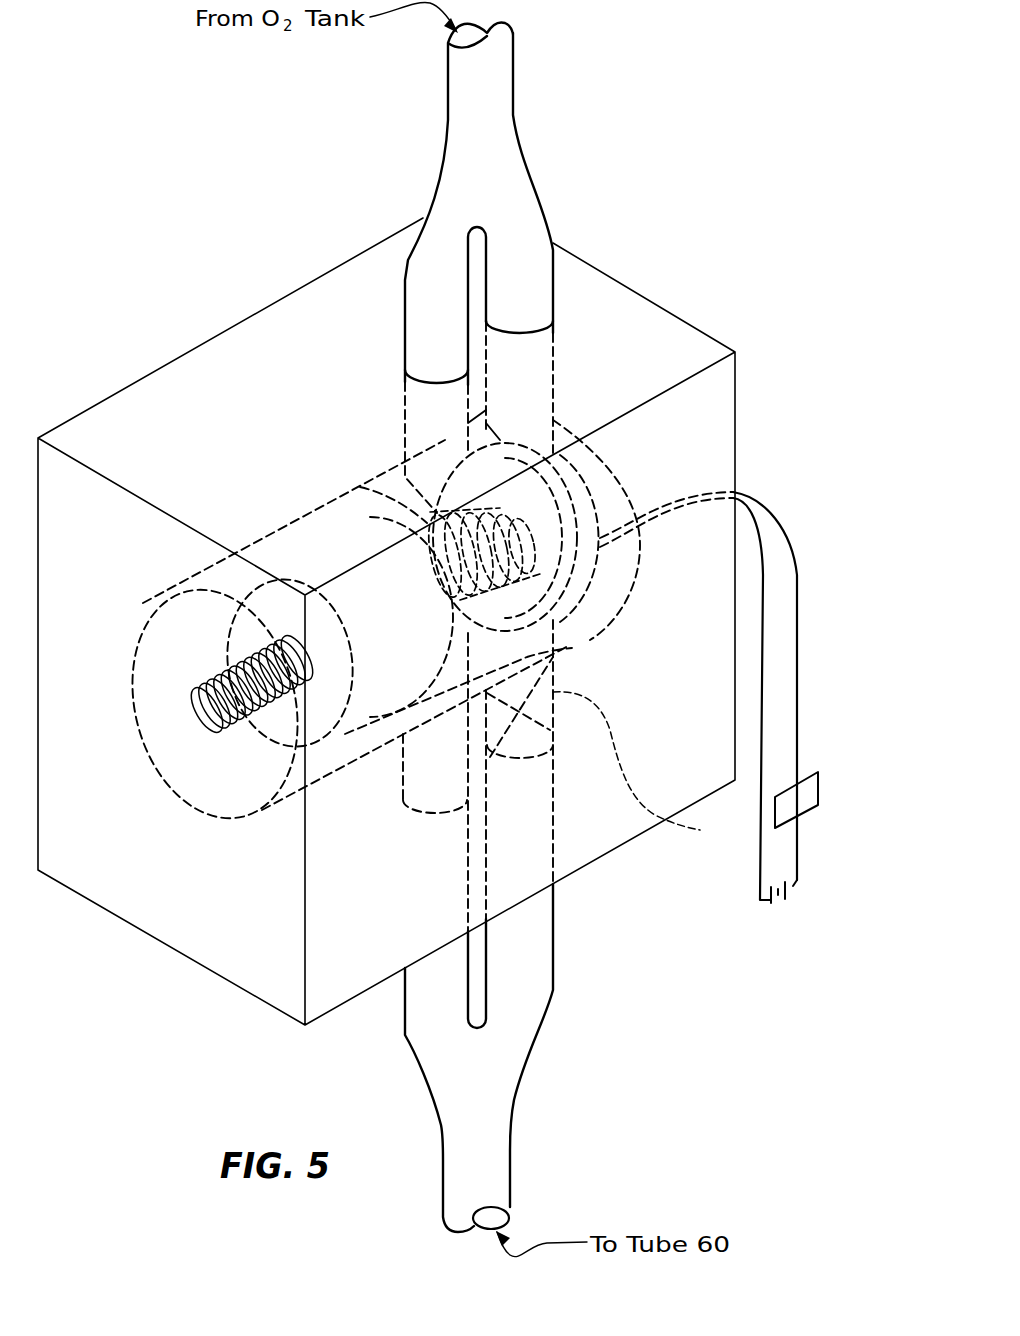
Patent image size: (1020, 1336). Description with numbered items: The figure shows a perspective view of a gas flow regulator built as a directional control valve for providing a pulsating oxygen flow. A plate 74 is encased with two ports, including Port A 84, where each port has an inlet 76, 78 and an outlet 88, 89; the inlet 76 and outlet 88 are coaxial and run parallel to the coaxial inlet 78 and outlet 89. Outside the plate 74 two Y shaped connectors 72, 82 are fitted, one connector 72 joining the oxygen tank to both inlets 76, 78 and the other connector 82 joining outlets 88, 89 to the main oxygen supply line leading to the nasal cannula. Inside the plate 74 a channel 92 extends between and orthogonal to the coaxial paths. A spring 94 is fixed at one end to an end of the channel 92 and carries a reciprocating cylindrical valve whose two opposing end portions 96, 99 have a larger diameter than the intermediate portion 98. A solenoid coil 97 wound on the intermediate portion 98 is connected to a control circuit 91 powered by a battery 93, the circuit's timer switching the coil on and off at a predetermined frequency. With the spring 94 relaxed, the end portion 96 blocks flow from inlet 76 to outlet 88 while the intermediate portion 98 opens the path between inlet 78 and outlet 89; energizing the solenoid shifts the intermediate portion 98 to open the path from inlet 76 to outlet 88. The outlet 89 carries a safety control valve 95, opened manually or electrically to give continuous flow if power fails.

The Y shaped connector 72 is at (487, 130).
The plate 74 is at (160, 878).
The inlet 76 is at (415, 425).
The inlet 78 is at (523, 377).
The Y shaped connector 82 is at (477, 1153).
The Port A 84 is at (433, 353).
The outlet 88 is at (427, 860).
The outlet 89 is at (523, 867).
The control circuit 91 is at (818, 772).
The channel 92 is at (617, 593).
The battery 93 is at (797, 880).
The spring 94 is at (148, 622).
The safety control valve 95 is at (644, 770).
The end portion 96 is at (328, 565).
The solenoid coil 97 is at (433, 750).
The intermediate portion 98 is at (420, 523).
The end portion 99 is at (563, 513).